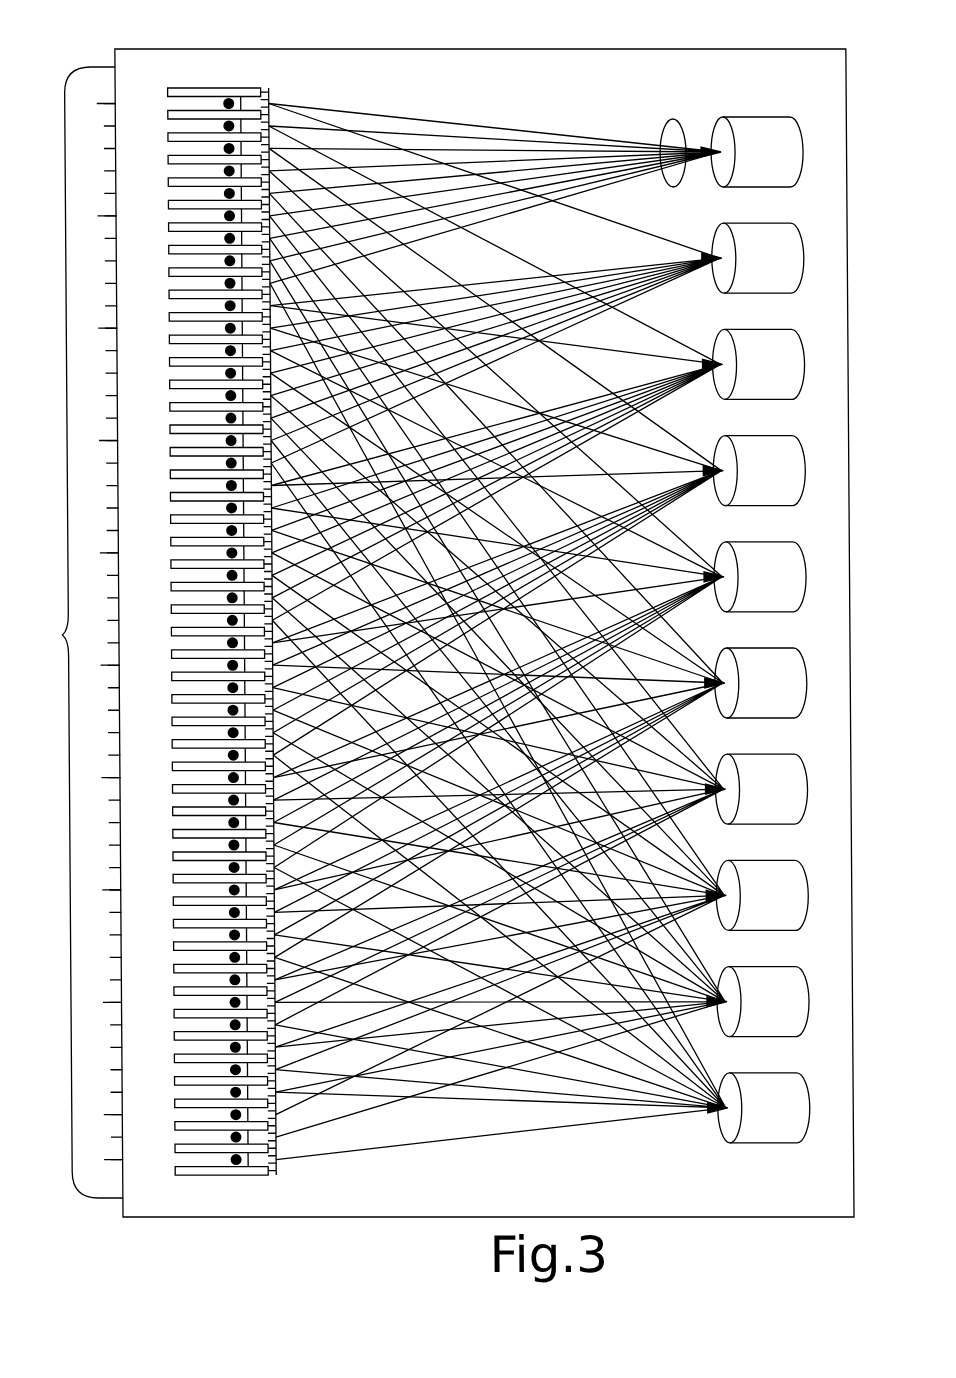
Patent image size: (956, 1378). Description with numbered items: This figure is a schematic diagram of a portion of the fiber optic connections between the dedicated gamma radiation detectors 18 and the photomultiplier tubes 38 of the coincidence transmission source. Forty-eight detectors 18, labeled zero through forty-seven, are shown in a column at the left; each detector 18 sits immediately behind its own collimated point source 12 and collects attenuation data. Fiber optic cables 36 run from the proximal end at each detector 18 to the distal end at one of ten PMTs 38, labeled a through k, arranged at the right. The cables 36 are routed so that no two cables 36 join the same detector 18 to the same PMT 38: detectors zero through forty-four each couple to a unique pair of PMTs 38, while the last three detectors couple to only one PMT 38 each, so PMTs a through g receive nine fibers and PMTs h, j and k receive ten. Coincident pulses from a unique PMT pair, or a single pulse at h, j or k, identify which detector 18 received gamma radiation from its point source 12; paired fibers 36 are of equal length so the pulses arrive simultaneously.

The dedicated gamma radiation detector 18 is at (151, 632).
The point source 12 is at (232, 147).
The fiber optic cable 36 is at (662, 140).
The photomultiplier tube 38 is at (802, 258).